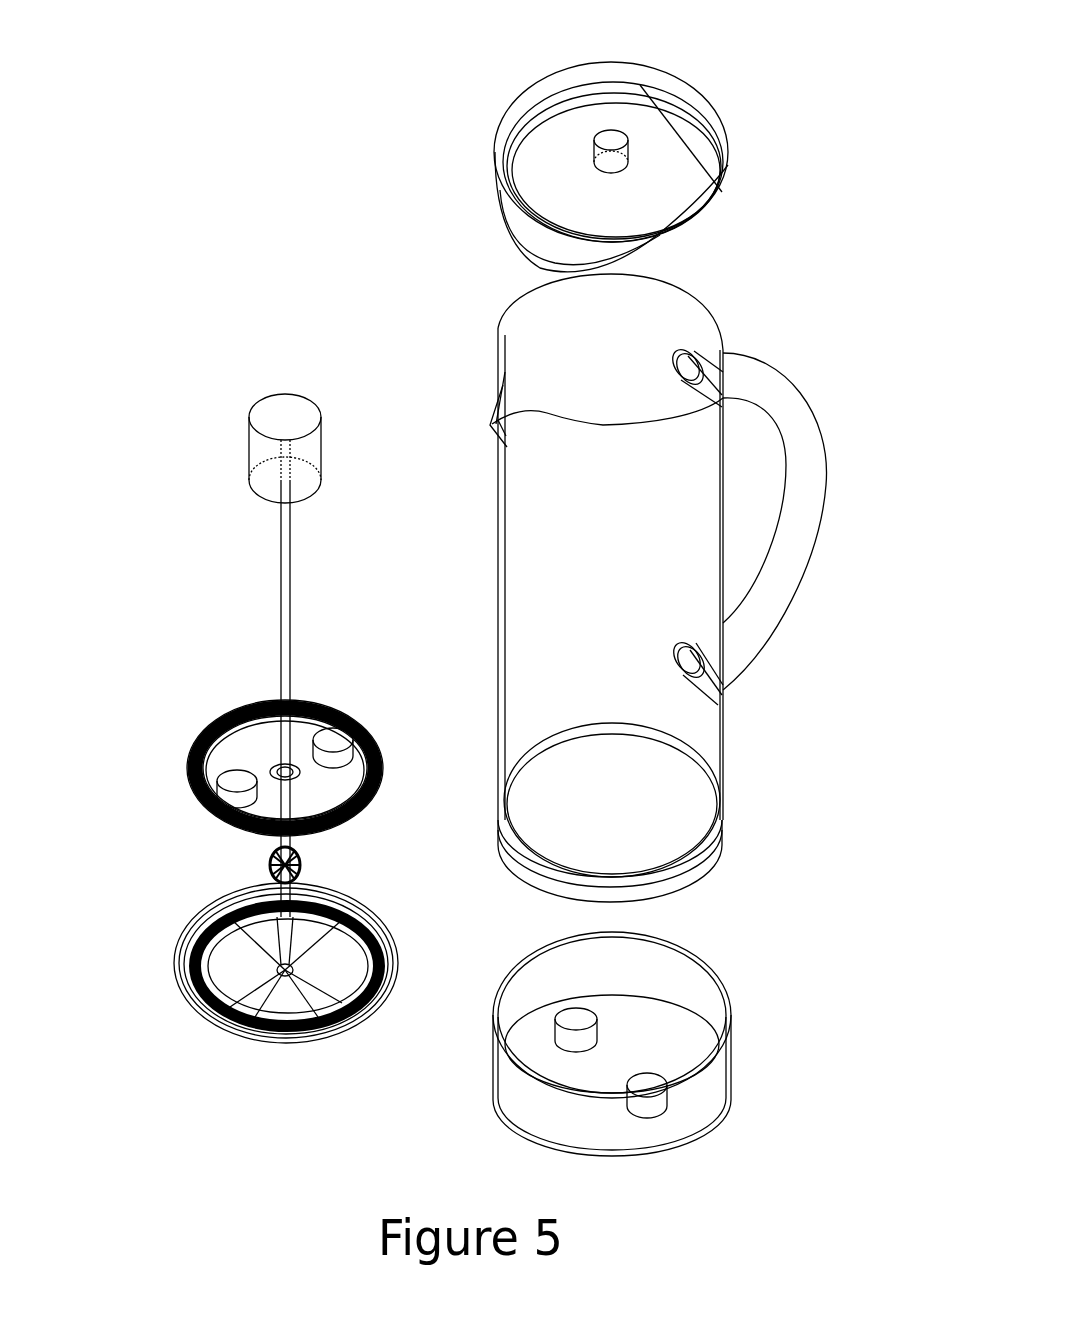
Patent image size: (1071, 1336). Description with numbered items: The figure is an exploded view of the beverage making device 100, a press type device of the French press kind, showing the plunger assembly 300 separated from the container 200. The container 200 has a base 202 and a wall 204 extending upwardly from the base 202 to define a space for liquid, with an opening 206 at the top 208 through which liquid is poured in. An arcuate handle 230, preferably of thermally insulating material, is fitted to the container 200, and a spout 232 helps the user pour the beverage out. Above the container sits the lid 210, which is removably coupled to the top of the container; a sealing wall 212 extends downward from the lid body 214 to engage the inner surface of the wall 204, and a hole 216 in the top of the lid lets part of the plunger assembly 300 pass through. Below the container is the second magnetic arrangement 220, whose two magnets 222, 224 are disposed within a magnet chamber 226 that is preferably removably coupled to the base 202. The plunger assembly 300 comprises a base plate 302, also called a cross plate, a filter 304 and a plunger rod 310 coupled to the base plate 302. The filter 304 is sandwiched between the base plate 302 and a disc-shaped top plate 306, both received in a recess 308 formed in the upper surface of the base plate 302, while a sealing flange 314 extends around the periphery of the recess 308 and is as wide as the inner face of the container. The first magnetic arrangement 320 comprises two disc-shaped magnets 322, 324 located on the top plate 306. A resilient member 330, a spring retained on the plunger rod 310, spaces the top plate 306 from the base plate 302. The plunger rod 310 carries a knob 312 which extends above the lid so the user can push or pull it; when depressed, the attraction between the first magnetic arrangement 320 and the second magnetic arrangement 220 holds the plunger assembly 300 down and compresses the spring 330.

The beverage making device 100 is at (652, 1171).
The container 200 is at (450, 284).
The base 202 is at (688, 827).
The wall 204 is at (703, 740).
The opening 206 is at (613, 340).
The top 208 is at (637, 423).
The lid 210 is at (670, 125).
The sealing wall 212 is at (555, 253).
The lid body 214 is at (635, 178).
The hole 216 is at (612, 138).
The second magnetic arrangement 220 is at (566, 1075).
The magnet 222 is at (595, 1030).
The magnet 224 is at (652, 1097).
The magnet chamber 226 is at (716, 1038).
The handle 230 is at (793, 548).
The spout 232 is at (492, 428).
The plunger assembly 300 is at (175, 682).
The base plate 302 is at (223, 1030).
The filter 304 is at (237, 948).
The top plate 306 is at (255, 742).
The recess 308 is at (298, 983).
The plunger rod 310 is at (282, 565).
The knob 312 is at (291, 415).
The sealing flange 314 is at (393, 948).
The first magnetic arrangement 320 is at (308, 720).
The magnet 322 is at (234, 785).
The magnet 324 is at (340, 735).
The resilient member 330 is at (300, 862).